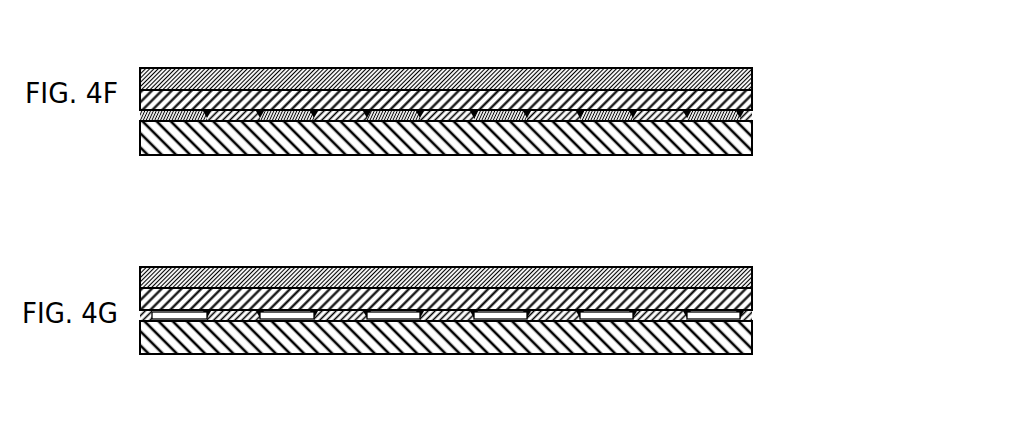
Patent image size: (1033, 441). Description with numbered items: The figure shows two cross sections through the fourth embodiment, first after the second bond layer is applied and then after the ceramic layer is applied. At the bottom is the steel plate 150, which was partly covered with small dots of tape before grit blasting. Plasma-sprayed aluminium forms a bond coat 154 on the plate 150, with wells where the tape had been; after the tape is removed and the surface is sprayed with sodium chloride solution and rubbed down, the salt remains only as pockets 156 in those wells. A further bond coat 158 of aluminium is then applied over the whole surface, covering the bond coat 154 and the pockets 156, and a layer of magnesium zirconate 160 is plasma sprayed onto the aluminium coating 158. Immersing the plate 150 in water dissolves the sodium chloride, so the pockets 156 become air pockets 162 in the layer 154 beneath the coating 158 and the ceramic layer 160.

In FIG. 4F, the steel plate 150 is at (183, 188).
In FIG. 4G, the steel plate 150 is at (202, 343).
In FIG. 4F, the bond coat 154 is at (650, 121).
In FIG. 4G, the bond coat 154 is at (432, 322).
In FIG. 4F, the pockets 156 is at (480, 121).
In FIG. 4F, the further bond coat 158 is at (668, 95).
In FIG. 4G, the further bond coat 158 is at (503, 297).
In FIG. 4F, the layer of magnesium zirconate 160 is at (574, 70).
In FIG. 4G, the layer of magnesium zirconate 160 is at (673, 277).
In FIG. 4G, the air pockets 162 is at (710, 319).